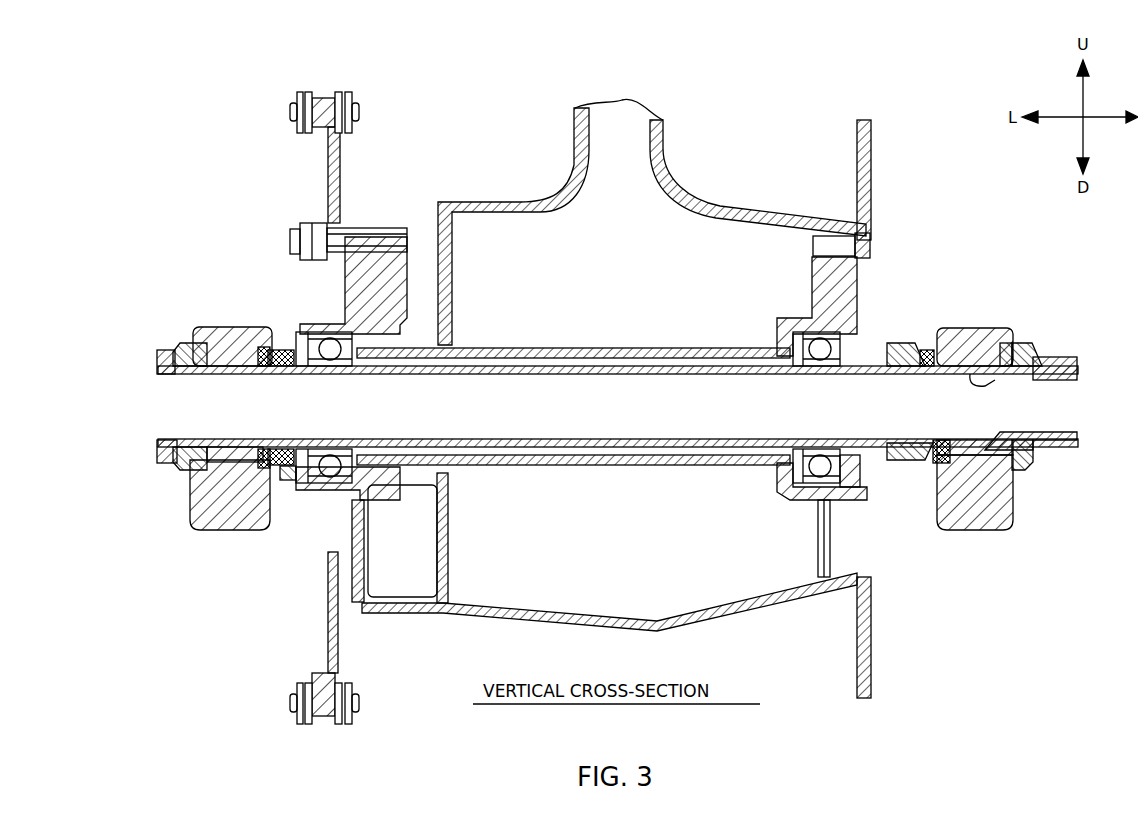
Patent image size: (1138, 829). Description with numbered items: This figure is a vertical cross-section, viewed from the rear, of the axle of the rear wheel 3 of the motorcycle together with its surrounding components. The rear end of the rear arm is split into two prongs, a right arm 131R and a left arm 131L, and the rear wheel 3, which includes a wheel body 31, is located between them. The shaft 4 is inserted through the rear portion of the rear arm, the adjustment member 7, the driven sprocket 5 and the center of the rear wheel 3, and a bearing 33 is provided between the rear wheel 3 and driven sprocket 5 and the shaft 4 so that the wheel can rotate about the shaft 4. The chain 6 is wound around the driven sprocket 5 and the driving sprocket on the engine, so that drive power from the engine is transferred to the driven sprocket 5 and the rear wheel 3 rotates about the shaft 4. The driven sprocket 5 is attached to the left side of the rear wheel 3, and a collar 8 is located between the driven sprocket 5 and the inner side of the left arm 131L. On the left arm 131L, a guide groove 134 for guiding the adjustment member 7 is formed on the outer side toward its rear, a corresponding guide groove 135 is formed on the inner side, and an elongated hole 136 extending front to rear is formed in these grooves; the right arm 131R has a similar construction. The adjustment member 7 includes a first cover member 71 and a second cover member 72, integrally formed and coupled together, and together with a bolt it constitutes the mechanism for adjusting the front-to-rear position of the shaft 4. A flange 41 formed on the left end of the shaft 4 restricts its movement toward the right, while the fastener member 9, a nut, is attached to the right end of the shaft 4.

The rear wheel 3 is at (502, 166).
The shaft 4 is at (547, 372).
The driven sprocket 5 is at (340, 163).
The chain 6 is at (300, 112).
The adjustment member 7 is at (170, 330).
The collar 8 is at (288, 350).
The fastener member 9 is at (1052, 360).
The wheel body 31 is at (738, 186).
The bearing 33 is at (330, 332).
The flange 41 is at (158, 356).
The first cover member 71 is at (187, 375).
The second cover member 72 is at (266, 375).
The left arm 131L is at (210, 322).
The right arm 131R is at (990, 326).
The guide groove 134 is at (176, 470).
The guide groove 135 is at (283, 468).
The elongated hole 136 is at (1020, 345).